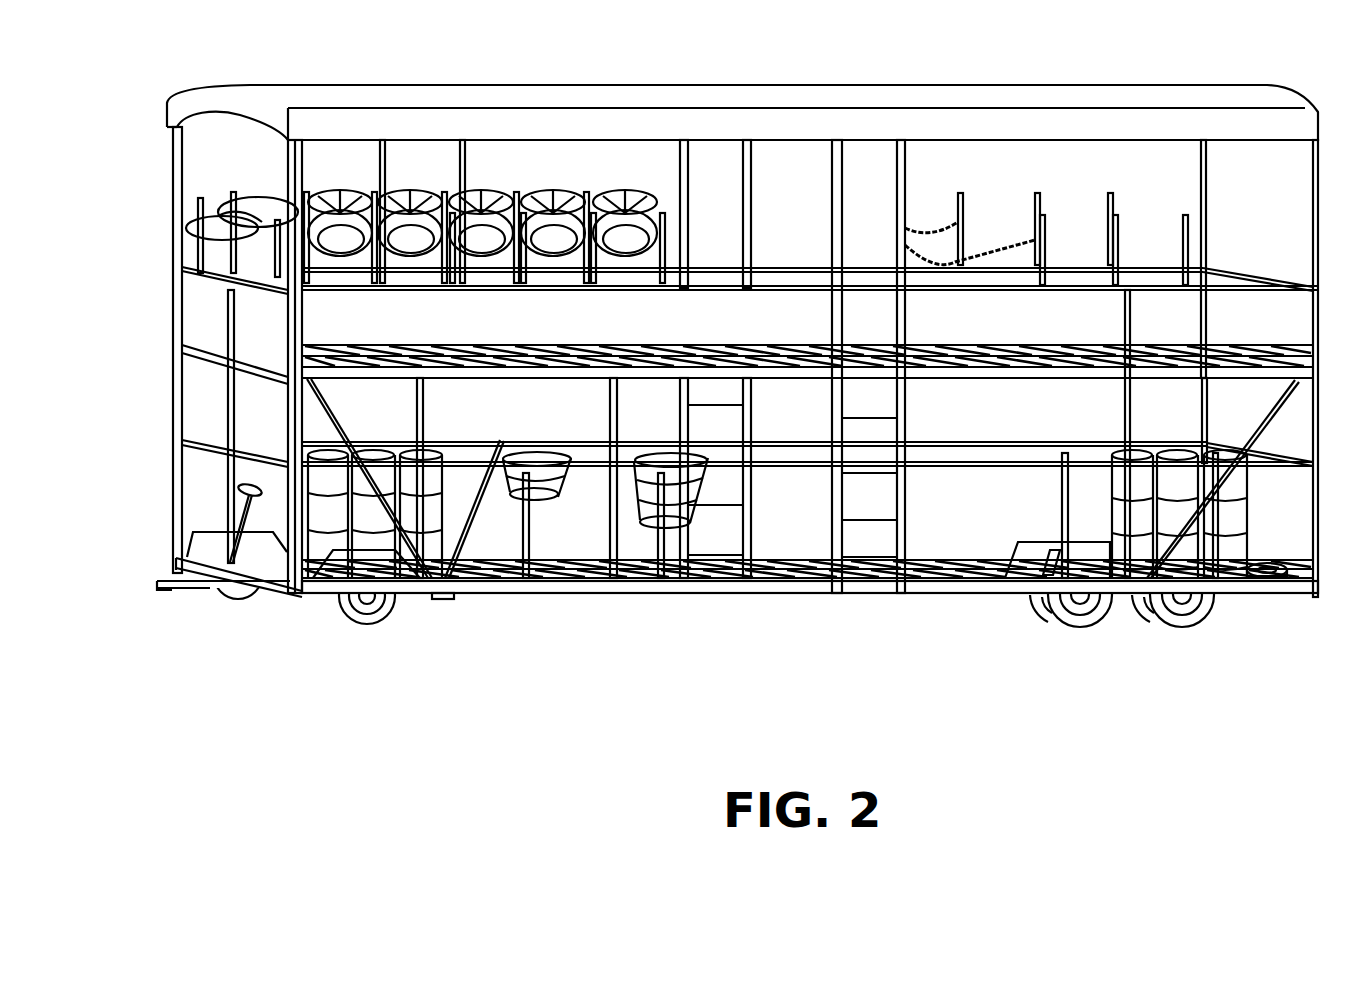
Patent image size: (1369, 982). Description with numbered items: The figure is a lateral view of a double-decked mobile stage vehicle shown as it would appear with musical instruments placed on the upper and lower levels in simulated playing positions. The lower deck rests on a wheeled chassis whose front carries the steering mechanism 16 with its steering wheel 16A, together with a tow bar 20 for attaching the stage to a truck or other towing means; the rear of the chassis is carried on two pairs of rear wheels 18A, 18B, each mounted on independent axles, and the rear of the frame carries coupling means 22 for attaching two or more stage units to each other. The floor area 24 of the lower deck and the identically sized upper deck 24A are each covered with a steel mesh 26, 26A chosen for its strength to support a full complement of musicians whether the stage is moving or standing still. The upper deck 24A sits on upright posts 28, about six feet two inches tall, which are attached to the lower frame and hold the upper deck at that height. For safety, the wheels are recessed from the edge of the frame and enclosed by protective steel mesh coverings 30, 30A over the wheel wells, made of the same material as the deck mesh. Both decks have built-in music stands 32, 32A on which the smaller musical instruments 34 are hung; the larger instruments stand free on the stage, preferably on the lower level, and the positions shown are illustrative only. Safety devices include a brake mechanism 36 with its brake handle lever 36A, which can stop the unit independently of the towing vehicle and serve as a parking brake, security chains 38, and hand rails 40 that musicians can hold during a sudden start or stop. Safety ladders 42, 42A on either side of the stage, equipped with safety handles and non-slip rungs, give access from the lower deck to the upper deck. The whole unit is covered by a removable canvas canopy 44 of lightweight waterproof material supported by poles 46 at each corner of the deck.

The steering mechanism 16 is at (248, 598).
The steering wheel 16A is at (243, 500).
The rear wheels 18A is at (1080, 625).
The rear wheels 18B is at (1015, 605).
The tow bar 20 is at (168, 588).
The coupling means 22 is at (1268, 562).
The floor area of the lower deck 24 is at (565, 593).
The upper deck 24A is at (540, 379).
The steel mesh 26 is at (565, 567).
The steel mesh 26A is at (555, 346).
The upright posts 28 is at (235, 315).
The protective steel mesh covering 30 is at (360, 570).
The protective steel mesh covering 30A is at (1105, 568).
The music stands 32 is at (530, 513).
The music stands 32A is at (245, 228).
The musical instruments 34 is at (555, 257).
The brake mechanism 36 is at (445, 599).
The brake handle 36A is at (493, 440).
The security chains 38 is at (910, 228).
The hand rails 40 is at (200, 278).
The safety ladder 42 is at (900, 303).
The safety ladder 42A is at (683, 185).
The canvas canopy 44 is at (185, 104).
The poles 46 is at (176, 152).